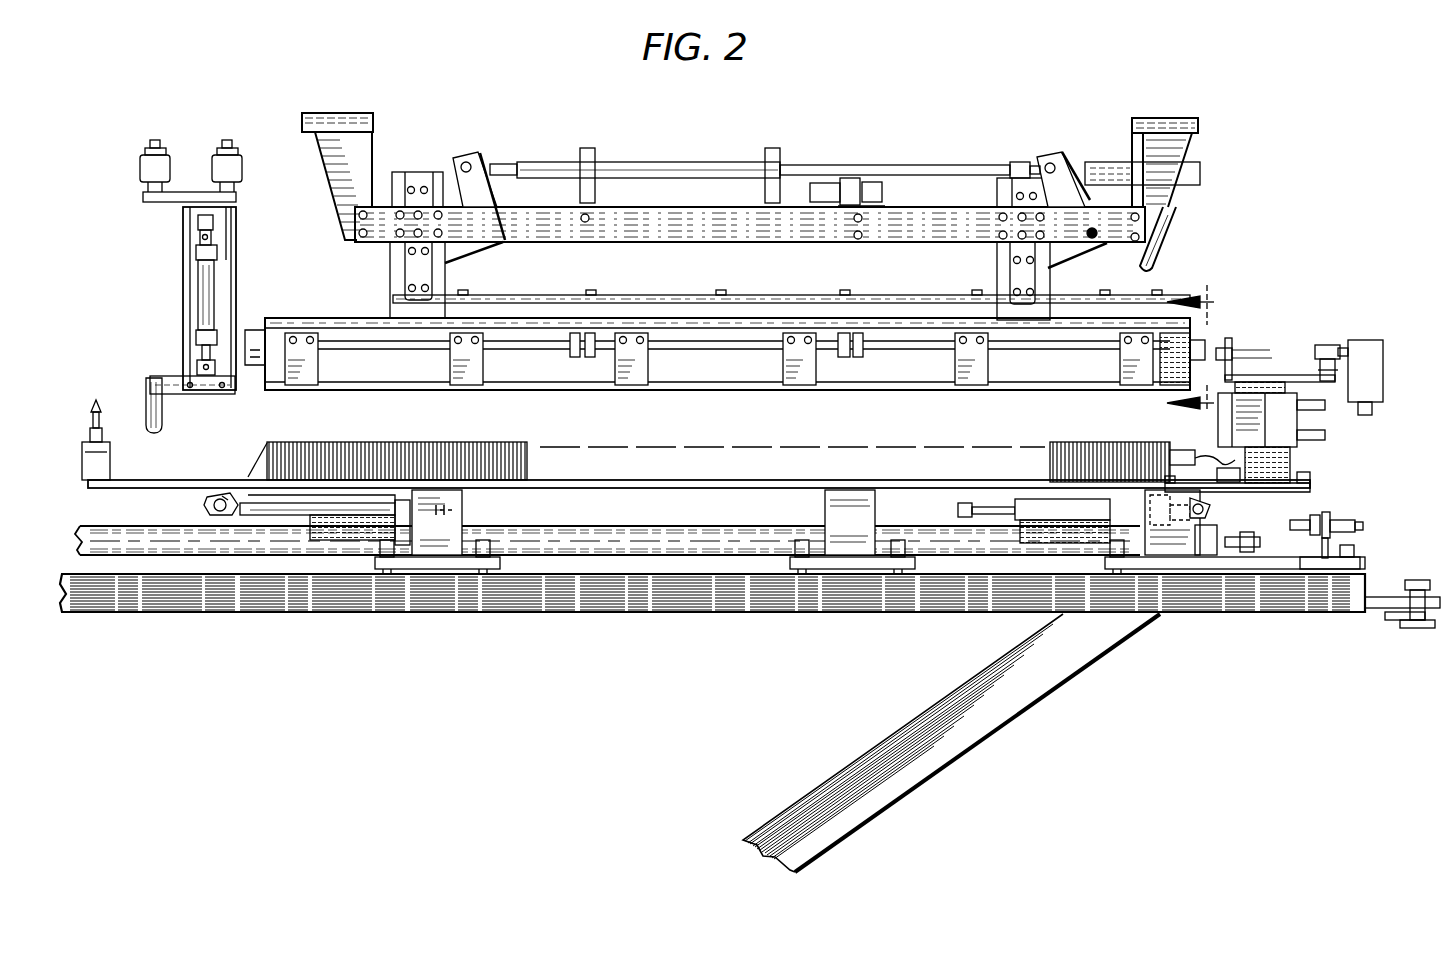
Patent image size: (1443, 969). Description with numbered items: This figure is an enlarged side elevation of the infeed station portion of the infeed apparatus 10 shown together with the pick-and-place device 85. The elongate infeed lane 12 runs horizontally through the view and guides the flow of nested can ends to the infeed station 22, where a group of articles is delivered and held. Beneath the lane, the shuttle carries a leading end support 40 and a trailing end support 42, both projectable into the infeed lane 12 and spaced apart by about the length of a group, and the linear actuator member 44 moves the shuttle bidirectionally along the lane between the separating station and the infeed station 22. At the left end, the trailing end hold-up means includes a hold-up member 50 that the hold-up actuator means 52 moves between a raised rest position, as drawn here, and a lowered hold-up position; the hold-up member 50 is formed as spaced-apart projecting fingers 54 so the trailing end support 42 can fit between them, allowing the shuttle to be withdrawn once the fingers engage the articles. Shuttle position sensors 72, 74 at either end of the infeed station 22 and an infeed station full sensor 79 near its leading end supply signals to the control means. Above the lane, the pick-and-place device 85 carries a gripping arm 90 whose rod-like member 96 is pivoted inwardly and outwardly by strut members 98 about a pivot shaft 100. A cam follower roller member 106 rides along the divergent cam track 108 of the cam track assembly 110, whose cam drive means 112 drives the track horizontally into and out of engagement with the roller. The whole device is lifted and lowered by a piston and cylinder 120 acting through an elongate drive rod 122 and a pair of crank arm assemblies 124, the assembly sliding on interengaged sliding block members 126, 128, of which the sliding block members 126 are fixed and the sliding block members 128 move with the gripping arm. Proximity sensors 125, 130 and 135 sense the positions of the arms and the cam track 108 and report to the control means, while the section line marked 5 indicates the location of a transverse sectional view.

The infeed apparatus 10 is at (168, 118).
The infeed lane 12 is at (160, 485).
The infeed station 22 is at (680, 630).
The leading end support 40 is at (1212, 503).
The trailing end support 42 is at (255, 458).
The linear actuator member 44 is at (555, 540).
The hold-up member 50 is at (162, 378).
The hold-up actuator means 52 is at (185, 296).
The projecting fingers 54 is at (165, 410).
The shuttle position sensor 72 is at (92, 432).
The shuttle position sensor 74 is at (1330, 513).
The infeed station full sensor 79 is at (1180, 455).
The pick-and-place device 85 is at (750, 216).
The gripping arm 90 is at (882, 392).
The rod-like member 96 is at (1036, 392).
The strut members 98 is at (962, 392).
The pivot shaft 100 is at (1060, 352).
The cam follower roller member 106 is at (1228, 350).
The cam track 108 is at (1225, 416).
The cam track assembly 110 is at (1312, 452).
The cam drive means 112 is at (1285, 392).
The piston and cylinder 120 is at (1212, 168).
The drive rod 122 is at (872, 170).
The crank arm assemblies 124 is at (484, 190).
The proximity sensor 125 is at (1178, 240).
The sliding block members 126 is at (405, 268).
The sliding block members 128 is at (395, 300).
The proximity sensor 130 is at (1325, 358).
The proximity sensor 135 is at (1242, 350).
The section line 5- 5 is at (1190, 347).